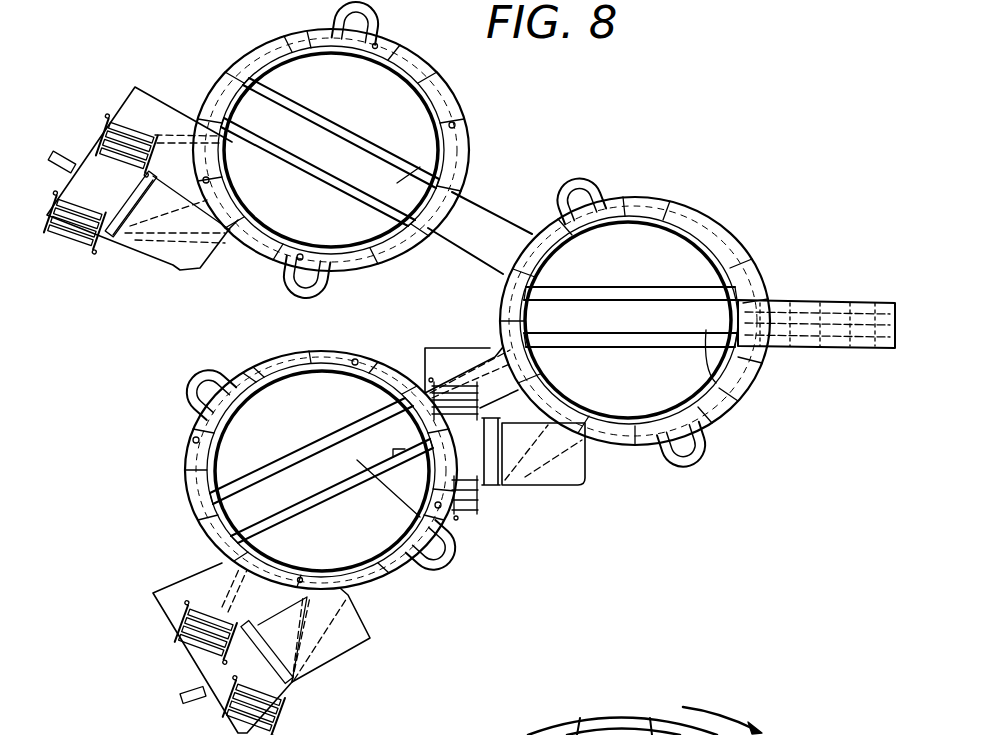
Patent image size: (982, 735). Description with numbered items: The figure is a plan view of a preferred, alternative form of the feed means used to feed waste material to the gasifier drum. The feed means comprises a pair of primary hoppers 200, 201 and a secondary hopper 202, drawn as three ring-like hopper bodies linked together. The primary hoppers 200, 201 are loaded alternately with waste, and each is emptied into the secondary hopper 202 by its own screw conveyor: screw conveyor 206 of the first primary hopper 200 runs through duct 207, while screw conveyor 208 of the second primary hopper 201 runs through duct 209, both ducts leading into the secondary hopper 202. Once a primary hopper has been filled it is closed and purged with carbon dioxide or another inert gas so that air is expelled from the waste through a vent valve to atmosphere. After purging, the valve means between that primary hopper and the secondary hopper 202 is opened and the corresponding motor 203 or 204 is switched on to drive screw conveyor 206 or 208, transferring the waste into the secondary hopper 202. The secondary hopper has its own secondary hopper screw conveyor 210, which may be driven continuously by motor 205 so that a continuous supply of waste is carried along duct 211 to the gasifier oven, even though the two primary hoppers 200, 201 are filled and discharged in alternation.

The primary hopper 200 is at (464, 101).
The primary hopper 201 is at (347, 347).
The secondary hopper 202 is at (740, 229).
The motor 203 is at (187, 255).
The motor 204 is at (347, 640).
The motor 205 is at (535, 451).
The screw conveyor 206 is at (434, 150).
The duct 207 is at (470, 217).
The screw conveyor 208 is at (430, 533).
The duct 209 is at (487, 346).
The secondary hopper screw conveyor 210 is at (733, 399).
The duct 211 is at (838, 302).